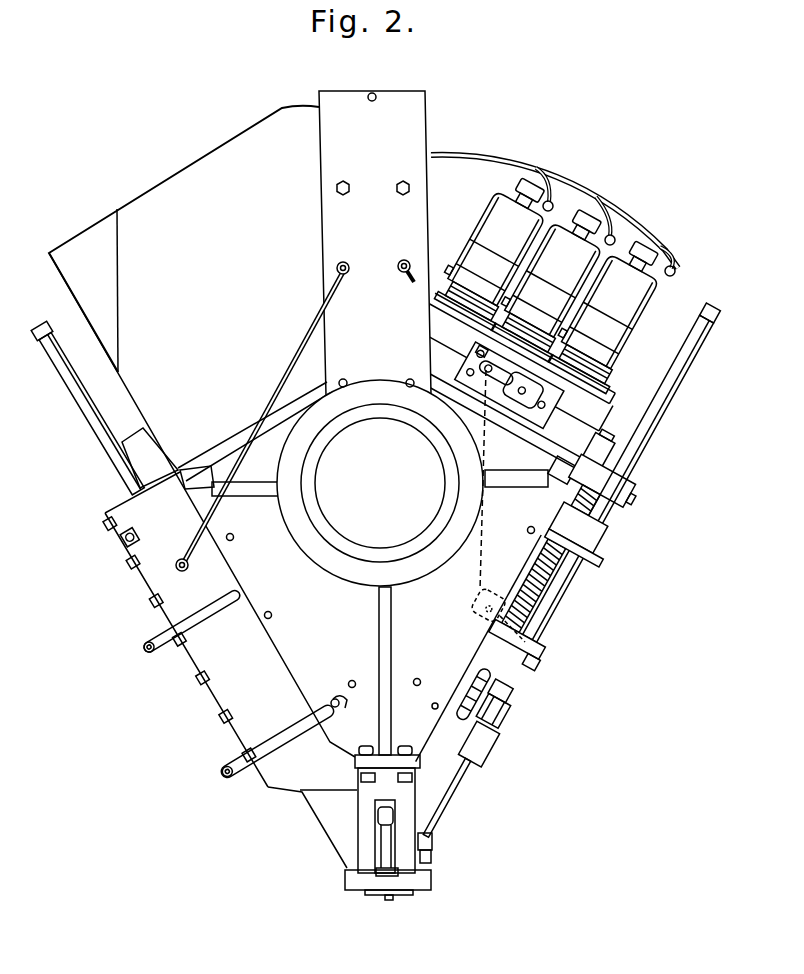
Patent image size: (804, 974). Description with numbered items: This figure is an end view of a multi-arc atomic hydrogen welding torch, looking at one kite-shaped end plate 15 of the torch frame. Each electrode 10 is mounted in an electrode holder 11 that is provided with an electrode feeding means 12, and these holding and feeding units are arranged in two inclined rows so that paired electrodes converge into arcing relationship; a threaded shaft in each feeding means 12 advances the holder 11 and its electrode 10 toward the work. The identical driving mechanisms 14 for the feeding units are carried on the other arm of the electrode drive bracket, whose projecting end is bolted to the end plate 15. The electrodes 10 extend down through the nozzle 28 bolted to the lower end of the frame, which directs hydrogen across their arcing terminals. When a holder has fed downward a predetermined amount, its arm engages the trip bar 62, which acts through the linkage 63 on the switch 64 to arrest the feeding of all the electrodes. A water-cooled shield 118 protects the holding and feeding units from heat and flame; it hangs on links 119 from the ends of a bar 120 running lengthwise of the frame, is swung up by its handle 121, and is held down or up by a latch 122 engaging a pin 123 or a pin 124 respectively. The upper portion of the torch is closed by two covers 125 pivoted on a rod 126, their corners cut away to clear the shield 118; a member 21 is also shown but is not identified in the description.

The electrode 10 is at (443, 808).
The electrode holder 11 is at (112, 454).
The electrode feeding means 12 is at (553, 572).
The driving mechanism 14 is at (655, 365).
The end plate 15 is at (283, 646).
The guide bar 21 is at (257, 489).
The nozzle 28 is at (364, 812).
The trip bar 62 is at (500, 613).
The linkage 63 is at (484, 552).
The switch 64 is at (550, 394).
The water-cooled shield 118 is at (212, 683).
The link 119 is at (278, 383).
The bar 120 is at (348, 265).
The handle 121 is at (140, 649).
The latch 122 is at (340, 697).
The pin 123 is at (338, 711).
The pin 124 is at (233, 540).
The cover 125 is at (181, 178).
The rod 126 is at (376, 92).